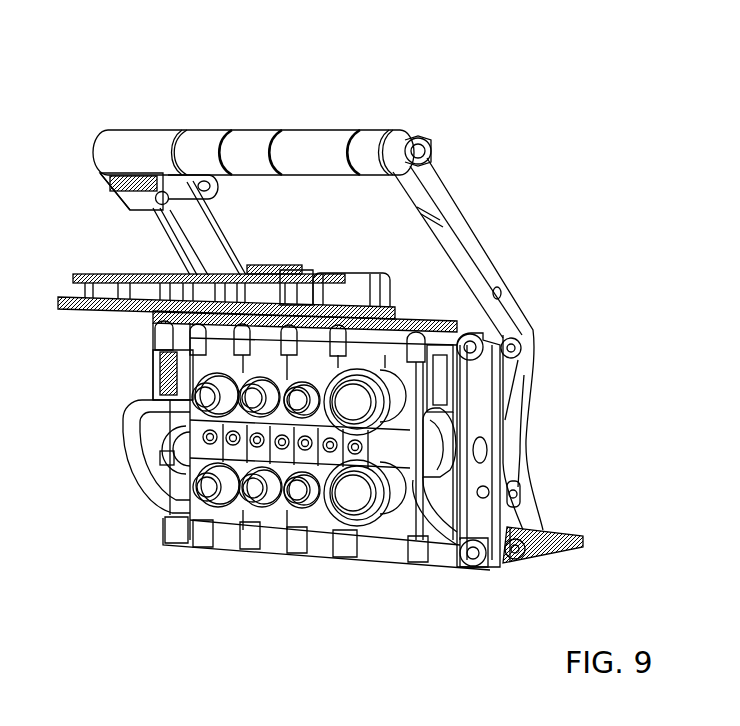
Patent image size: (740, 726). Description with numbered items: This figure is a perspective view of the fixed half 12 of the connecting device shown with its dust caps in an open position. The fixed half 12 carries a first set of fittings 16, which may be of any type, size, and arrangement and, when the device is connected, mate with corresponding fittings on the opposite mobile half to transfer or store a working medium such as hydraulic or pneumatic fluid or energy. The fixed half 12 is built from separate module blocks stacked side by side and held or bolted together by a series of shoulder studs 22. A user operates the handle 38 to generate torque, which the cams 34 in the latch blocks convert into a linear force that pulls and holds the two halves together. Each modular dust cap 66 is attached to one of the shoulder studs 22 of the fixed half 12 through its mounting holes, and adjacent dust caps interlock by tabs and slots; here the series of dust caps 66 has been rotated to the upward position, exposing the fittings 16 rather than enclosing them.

The handle 38 is at (252, 147).
The dust cap 66 is at (93, 277).
The shoulder stud 22 is at (423, 343).
The fixed half 12 is at (483, 396).
The cam 34 is at (132, 450).
The first set of fittings 16 is at (224, 487).